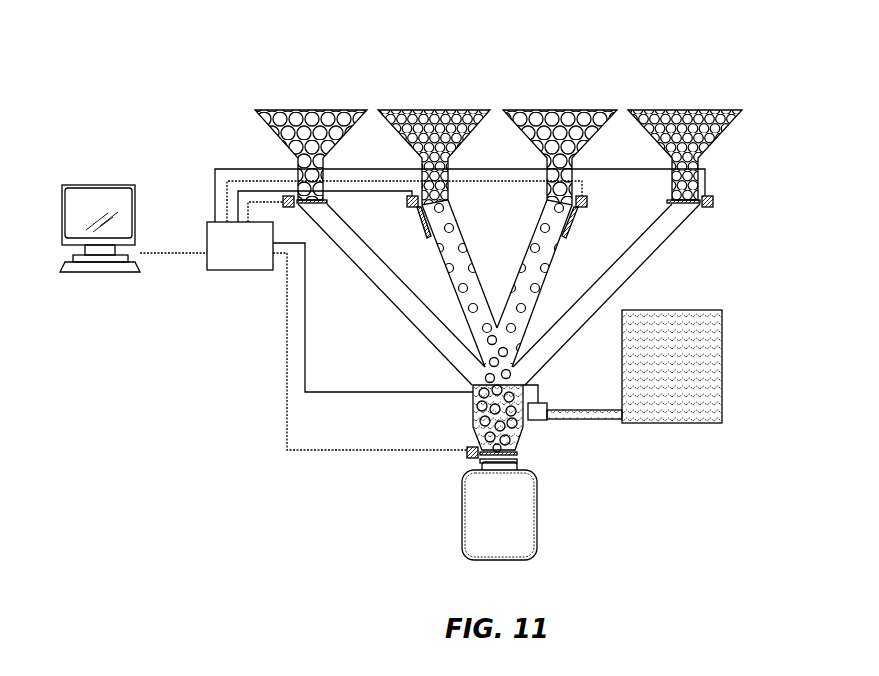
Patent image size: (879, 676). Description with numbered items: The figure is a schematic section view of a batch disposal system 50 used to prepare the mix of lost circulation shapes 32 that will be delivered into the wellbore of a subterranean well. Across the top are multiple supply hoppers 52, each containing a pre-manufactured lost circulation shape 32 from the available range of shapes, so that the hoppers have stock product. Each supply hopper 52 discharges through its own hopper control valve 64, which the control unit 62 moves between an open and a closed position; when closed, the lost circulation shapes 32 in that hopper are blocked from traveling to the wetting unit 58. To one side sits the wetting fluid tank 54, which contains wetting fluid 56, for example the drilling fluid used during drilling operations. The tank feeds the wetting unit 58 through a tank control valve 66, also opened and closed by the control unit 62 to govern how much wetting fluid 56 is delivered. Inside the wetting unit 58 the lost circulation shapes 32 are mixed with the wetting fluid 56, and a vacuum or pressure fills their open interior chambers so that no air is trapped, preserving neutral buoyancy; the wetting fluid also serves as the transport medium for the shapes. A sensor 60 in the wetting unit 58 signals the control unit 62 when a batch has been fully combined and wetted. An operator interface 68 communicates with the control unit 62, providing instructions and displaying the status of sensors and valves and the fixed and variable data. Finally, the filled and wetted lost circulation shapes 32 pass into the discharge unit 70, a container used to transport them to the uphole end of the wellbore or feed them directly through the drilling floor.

The lost circulation shape 32 is at (572, 108).
The batch disposal system 50 is at (225, 398).
The supply hopper 52 is at (723, 131).
The wetting fluid tank 54 is at (712, 310).
The wetting fluid 56 is at (708, 380).
The wetting unit 58 is at (520, 440).
The sensor 60 is at (470, 410).
The control unit 62 is at (254, 257).
The hopper control valve 64 is at (682, 206).
The tank control valve 66 is at (545, 404).
The operator interface 68 is at (88, 185).
The discharge unit 70 is at (523, 530).